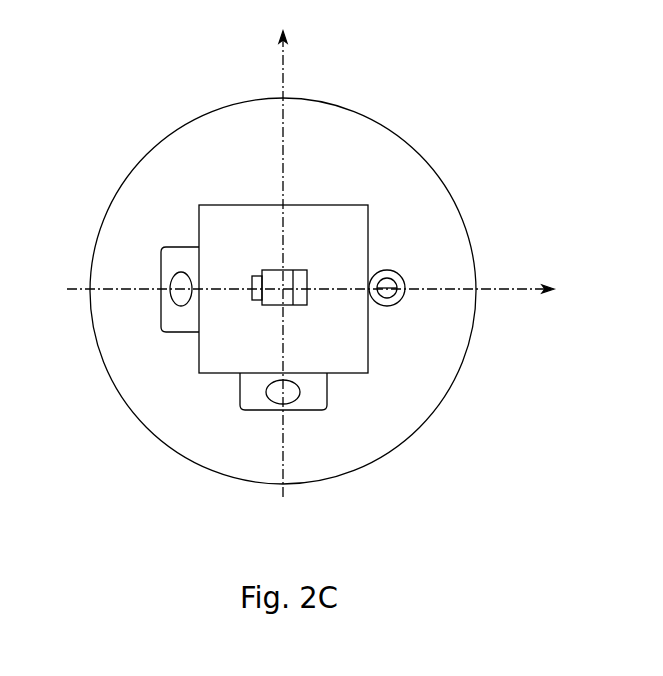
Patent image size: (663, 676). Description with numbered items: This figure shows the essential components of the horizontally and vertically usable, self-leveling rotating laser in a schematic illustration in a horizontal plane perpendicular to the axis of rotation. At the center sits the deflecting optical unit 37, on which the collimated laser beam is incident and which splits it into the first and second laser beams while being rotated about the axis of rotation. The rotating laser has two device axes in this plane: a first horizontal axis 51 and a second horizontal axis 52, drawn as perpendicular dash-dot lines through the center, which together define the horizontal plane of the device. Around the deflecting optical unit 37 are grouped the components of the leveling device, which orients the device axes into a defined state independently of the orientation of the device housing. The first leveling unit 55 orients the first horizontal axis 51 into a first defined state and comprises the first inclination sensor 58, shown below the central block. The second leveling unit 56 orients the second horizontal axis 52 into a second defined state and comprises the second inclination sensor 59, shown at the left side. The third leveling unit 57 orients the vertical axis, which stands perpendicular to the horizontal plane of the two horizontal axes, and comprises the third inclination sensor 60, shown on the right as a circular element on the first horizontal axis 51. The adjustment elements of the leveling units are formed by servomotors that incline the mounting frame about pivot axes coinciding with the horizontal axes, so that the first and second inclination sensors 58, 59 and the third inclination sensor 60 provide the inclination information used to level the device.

The deflecting optical unit 37 is at (275, 298).
The first horizontal axis 51 is at (517, 296).
The second horizontal axis 52 is at (278, 57).
The first leveling unit 55 is at (265, 432).
The second leveling unit 56 is at (136, 277).
The third leveling unit 57 is at (388, 268).
The first inclination sensor 58 is at (315, 400).
The second inclination sensor 59 is at (183, 318).
The third inclination sensor 60 is at (385, 296).